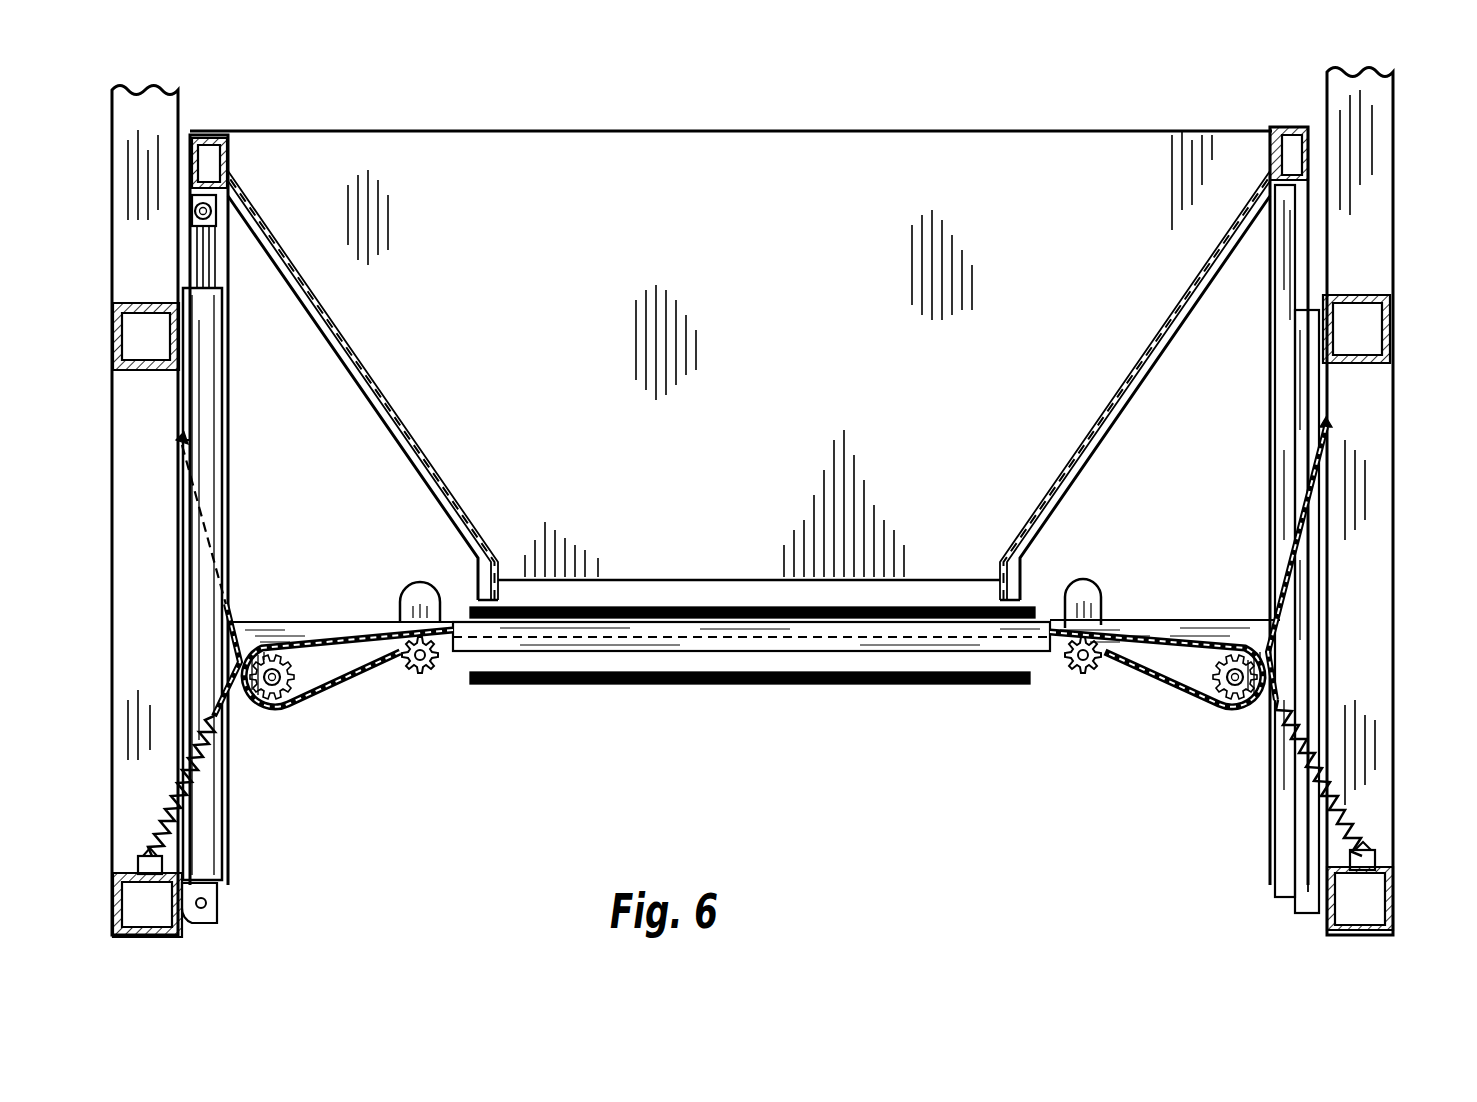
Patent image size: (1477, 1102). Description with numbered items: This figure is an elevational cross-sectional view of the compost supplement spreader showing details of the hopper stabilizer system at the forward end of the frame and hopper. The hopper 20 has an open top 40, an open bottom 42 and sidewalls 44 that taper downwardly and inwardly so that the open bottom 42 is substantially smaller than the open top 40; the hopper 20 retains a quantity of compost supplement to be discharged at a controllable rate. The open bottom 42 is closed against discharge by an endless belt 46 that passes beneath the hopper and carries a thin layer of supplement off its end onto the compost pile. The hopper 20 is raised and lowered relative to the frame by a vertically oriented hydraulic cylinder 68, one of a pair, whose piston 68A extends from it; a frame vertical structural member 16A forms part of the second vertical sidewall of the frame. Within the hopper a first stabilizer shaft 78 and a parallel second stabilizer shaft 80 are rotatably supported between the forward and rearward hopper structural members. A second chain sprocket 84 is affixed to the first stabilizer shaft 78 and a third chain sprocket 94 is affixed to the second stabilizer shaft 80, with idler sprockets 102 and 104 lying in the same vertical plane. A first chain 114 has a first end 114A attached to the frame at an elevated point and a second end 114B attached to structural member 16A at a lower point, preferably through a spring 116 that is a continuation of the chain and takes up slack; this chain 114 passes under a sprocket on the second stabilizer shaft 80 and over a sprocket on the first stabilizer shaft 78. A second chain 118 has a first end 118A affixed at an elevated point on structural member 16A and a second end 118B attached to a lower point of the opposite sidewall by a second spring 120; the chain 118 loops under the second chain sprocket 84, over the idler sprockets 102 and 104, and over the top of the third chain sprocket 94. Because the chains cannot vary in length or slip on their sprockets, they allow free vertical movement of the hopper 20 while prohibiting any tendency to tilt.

The frame vertical structural member 16A is at (1375, 507).
The hopper 20 is at (915, 98).
The open top 40 is at (759, 136).
The open bottom 42 is at (682, 585).
The sidewalls 44 is at (352, 346).
The endless belt 46 is at (595, 686).
The hydraulic cylinder 68 is at (222, 511).
The piston 68A is at (210, 258).
The first stabilizer shaft 78 is at (1230, 690).
The second stabilizer shaft 80 is at (272, 686).
The second chain sprocket 84 is at (1254, 692).
The third chain sprocket 94 is at (290, 674).
The idler sprocket 102 is at (1083, 662).
The idler sprocket 104 is at (420, 662).
The first chain 114 is at (232, 612).
The first end of first chain 114A is at (185, 444).
The second end of first chain 114B is at (1366, 852).
The spring 116 is at (1346, 800).
The second chain 118 is at (360, 633).
The first end of second chain 118A is at (1380, 436).
The second end of second chain 118B is at (140, 862).
The second spring 120 is at (160, 820).